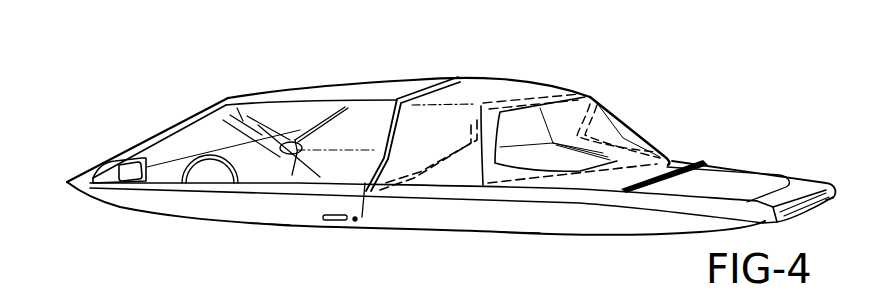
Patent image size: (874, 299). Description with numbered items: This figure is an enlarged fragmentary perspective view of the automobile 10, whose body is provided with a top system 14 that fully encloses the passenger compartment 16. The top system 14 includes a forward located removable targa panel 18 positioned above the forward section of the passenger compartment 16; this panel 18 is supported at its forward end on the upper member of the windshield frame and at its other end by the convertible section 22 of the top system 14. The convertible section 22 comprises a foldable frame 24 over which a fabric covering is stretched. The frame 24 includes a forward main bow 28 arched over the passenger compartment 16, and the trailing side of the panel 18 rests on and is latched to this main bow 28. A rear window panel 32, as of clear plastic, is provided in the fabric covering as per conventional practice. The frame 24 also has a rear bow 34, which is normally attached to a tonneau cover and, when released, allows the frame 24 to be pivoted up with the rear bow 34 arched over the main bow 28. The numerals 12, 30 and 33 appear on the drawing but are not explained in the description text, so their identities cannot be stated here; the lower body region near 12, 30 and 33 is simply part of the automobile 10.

The automobile 10 is at (106, 124).
The vehicle body 12 is at (116, 199).
The top system 14 is at (445, 33).
The passenger compartment 16 is at (248, 136).
The removable targa panel 18 is at (327, 91).
The convertible section 22 is at (592, 45).
The foldable frame 24 is at (440, 174).
The forward main bow 28 is at (460, 78).
The lower body panel 30 is at (513, 298).
The rear window panel 32 is at (620, 120).
The rocker panel 33 is at (297, 298).
The rear bow 34 is at (670, 153).